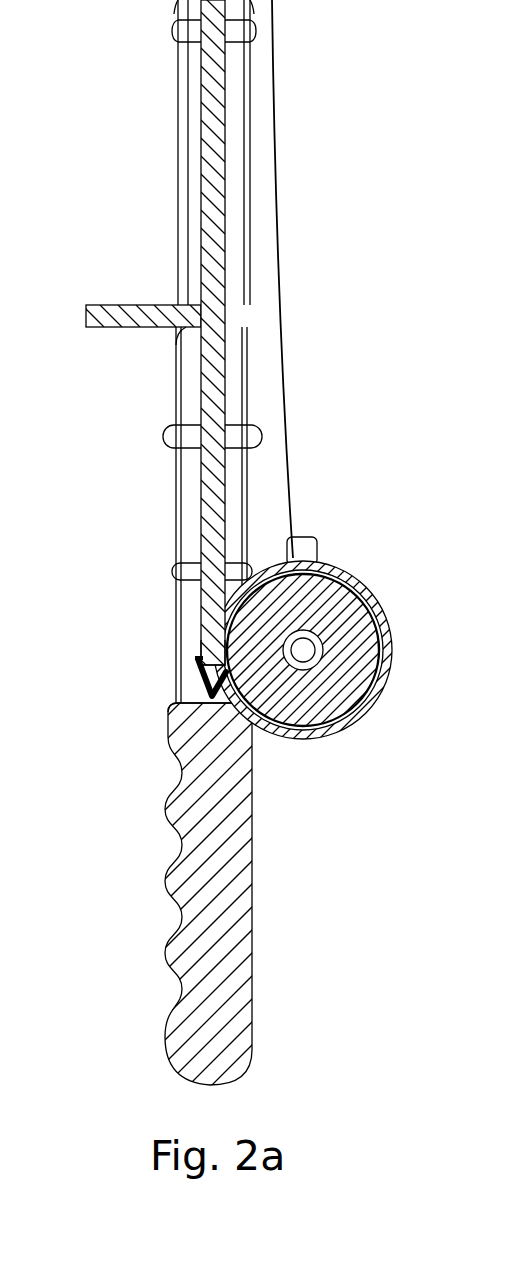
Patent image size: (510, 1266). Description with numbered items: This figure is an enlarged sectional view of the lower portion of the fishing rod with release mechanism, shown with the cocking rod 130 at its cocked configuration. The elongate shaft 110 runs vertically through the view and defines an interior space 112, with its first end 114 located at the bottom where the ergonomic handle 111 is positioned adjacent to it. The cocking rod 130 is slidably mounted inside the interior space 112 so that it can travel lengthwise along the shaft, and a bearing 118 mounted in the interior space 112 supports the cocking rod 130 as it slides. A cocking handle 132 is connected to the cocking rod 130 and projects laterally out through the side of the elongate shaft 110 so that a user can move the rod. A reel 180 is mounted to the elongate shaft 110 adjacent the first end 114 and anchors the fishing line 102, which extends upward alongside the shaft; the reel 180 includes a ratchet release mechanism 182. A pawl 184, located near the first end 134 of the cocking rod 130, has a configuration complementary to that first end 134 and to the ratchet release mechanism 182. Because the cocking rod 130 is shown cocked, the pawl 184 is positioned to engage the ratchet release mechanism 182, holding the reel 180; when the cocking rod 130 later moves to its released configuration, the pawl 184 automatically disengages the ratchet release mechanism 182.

The fishing line 102 is at (279, 248).
The elongate shaft 110 is at (162, 81).
The ergonomic handle 111 is at (183, 847).
The interior space 112 is at (190, 383).
The first end 114 is at (175, 698).
The bearing 118 is at (178, 453).
The cocking rod 130 is at (200, 195).
The cocking handle 132 is at (124, 300).
The first end of the cocking rod 134 is at (203, 660).
The reel 180 is at (343, 568).
The ratchet release mechanism 182 is at (302, 727).
The pawl 184 is at (197, 673).